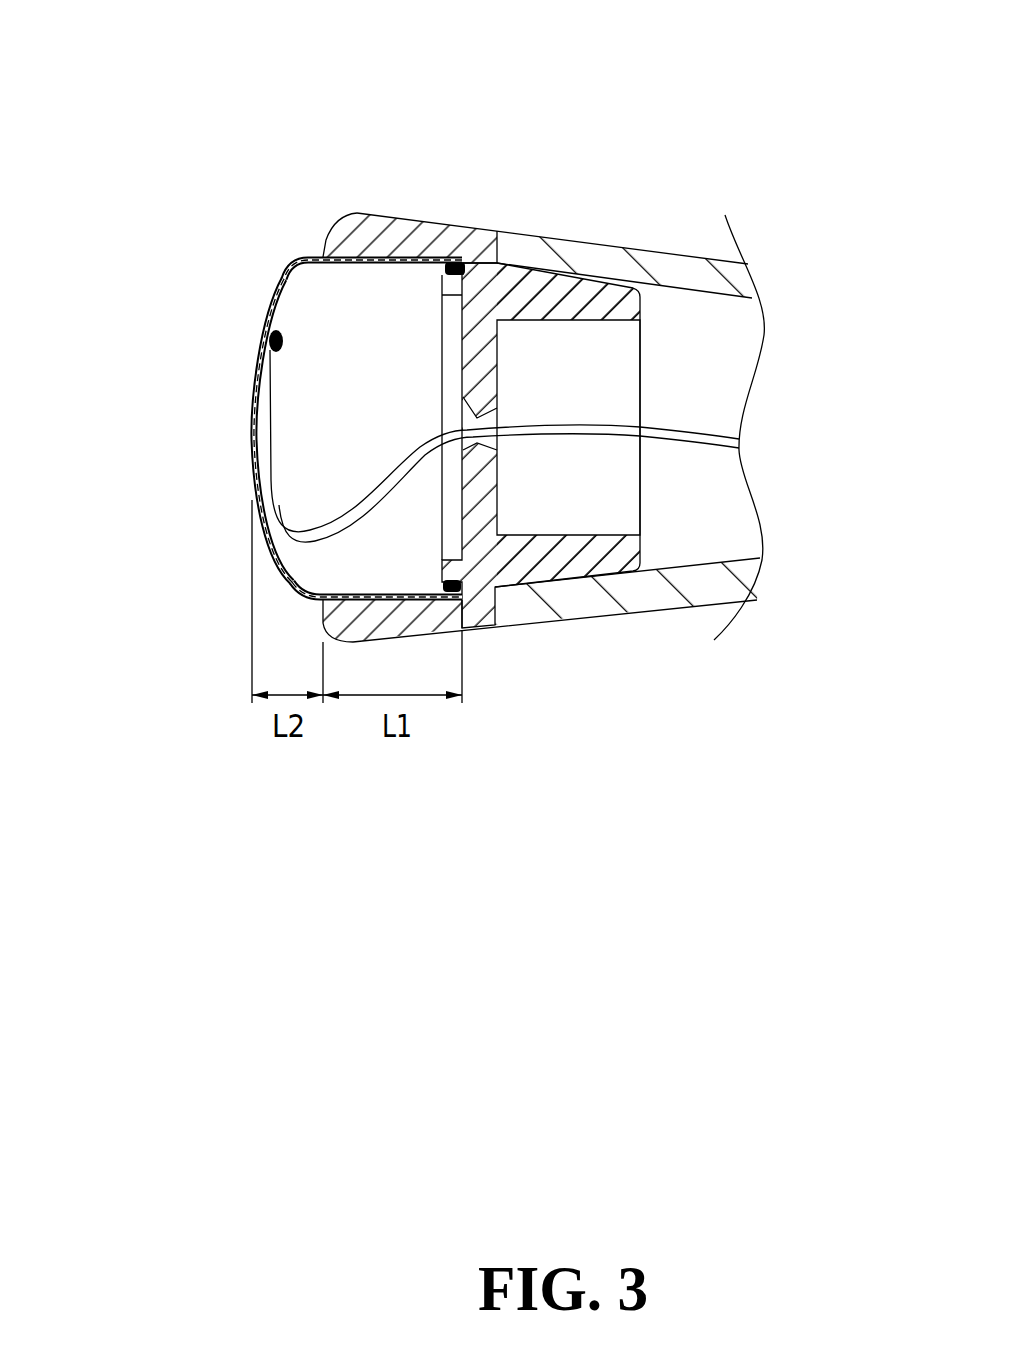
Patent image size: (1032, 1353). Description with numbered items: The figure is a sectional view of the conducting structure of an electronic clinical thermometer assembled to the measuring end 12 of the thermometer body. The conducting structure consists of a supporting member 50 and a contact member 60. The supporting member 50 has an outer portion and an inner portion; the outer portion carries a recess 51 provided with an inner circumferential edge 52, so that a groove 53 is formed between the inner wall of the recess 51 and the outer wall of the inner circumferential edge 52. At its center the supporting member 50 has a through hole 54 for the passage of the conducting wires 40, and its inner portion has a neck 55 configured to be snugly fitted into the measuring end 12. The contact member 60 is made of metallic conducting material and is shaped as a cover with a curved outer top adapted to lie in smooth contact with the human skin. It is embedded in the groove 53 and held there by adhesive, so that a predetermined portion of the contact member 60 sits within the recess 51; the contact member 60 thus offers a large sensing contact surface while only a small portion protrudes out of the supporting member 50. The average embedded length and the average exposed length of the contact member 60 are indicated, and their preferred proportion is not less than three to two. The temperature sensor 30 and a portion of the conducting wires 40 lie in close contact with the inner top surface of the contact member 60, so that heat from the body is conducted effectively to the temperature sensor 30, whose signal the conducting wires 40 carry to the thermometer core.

The measuring end 12 is at (698, 276).
The temperature sensor 30 is at (265, 347).
The conducting wires 40 is at (703, 449).
The supporting member 50 is at (599, 438).
The recess 51 is at (353, 337).
The inner circumferential edge 52 is at (383, 240).
The groove 53 is at (477, 262).
The through hole 54 is at (500, 433).
The neck 55 is at (535, 290).
The contact member 60 is at (250, 433).